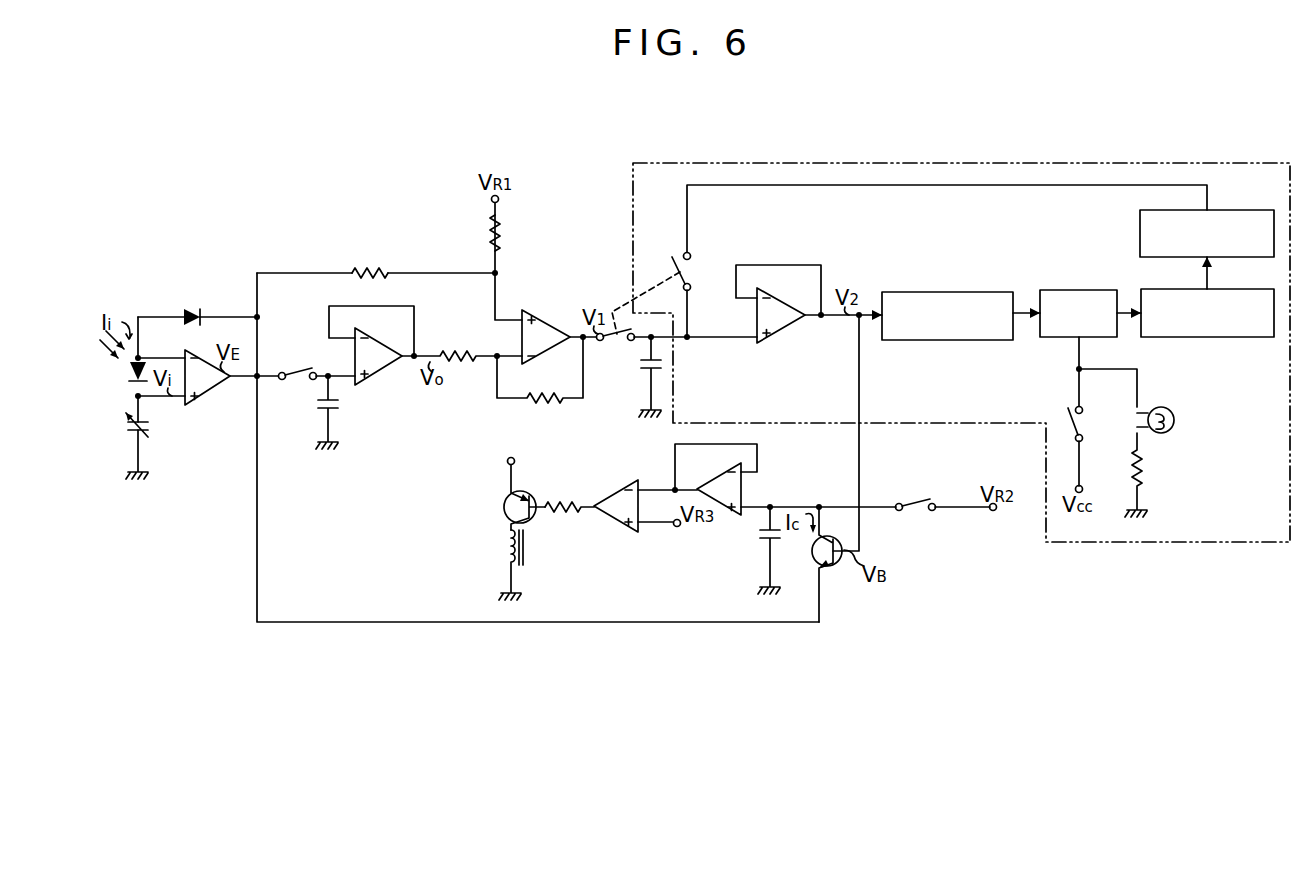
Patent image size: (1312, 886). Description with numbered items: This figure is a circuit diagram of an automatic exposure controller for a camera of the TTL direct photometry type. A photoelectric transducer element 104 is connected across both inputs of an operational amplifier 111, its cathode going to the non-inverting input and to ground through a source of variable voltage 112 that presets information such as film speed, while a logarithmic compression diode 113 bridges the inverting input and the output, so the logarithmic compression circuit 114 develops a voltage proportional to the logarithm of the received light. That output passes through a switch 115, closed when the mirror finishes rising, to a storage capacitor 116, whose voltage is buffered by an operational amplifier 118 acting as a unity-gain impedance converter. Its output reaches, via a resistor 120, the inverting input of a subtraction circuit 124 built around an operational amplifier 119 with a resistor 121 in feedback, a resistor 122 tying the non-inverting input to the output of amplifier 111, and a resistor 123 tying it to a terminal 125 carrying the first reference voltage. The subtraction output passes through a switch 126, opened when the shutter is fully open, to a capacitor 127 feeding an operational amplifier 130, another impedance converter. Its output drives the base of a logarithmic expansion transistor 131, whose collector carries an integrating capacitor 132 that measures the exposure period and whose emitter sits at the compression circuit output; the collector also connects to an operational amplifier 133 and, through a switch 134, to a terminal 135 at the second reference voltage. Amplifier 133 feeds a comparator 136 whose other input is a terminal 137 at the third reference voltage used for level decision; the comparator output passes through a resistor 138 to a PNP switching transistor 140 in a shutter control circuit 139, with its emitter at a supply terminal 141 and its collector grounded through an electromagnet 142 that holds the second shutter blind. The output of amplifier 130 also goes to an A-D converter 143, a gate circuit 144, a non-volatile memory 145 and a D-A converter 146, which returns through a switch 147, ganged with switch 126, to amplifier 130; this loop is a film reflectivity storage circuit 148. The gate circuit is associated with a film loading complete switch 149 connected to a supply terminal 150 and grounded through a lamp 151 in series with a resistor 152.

The photoelectric transducer element 104 is at (130, 372).
The operational amplifier 111 is at (215, 382).
The source of variable voltage 112 is at (140, 428).
The logarithmic compression diode 113 is at (194, 309).
The logarithmic compression circuit 114 is at (215, 412).
The switch 115 is at (287, 369).
The storage capacitor 116 is at (355, 408).
The operational amplifier 118 is at (375, 375).
The operational amplifier 119 is at (548, 337).
The resistor 120 is at (455, 350).
The resistor 121 is at (549, 398).
The resistor 122 is at (370, 267).
The resistor 123 is at (505, 238).
The subtraction circuit 124 is at (545, 343).
The terminal 125 is at (497, 202).
The switch 126 is at (611, 340).
The capacitor 127 is at (642, 374).
The operational amplifier 130 is at (785, 333).
The logarithmic expansion transistor 131 is at (814, 556).
The integrating capacitor 132 is at (762, 540).
The operational amplifier 133 is at (717, 480).
The switch 134 is at (919, 505).
The terminal 135 is at (993, 510).
The comparator 136 is at (620, 492).
The terminal 137 is at (676, 528).
The resistor 138 is at (567, 516).
The shutter control circuit 139 is at (533, 523).
The PNP switching transistor 140 is at (507, 505).
The terminal 141 is at (506, 462).
The electromagnet 142 is at (507, 554).
The A-D converter 143 is at (969, 290).
The gate circuit 144 is at (1098, 290).
The non-volatile memory 145 is at (1222, 340).
The D-A converter 146 is at (1221, 212).
The switch 147 is at (689, 266).
The film reflectivity storage circuit 148 is at (863, 161).
The film loading complete switch 149 is at (1084, 416).
The terminal 150 is at (1085, 490).
The lamp 151 is at (1177, 416).
The resistor 152 is at (1144, 466).